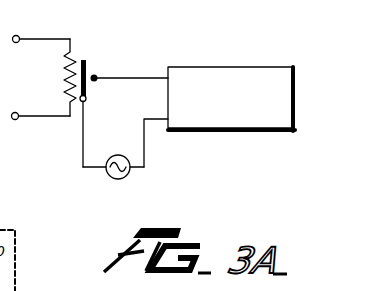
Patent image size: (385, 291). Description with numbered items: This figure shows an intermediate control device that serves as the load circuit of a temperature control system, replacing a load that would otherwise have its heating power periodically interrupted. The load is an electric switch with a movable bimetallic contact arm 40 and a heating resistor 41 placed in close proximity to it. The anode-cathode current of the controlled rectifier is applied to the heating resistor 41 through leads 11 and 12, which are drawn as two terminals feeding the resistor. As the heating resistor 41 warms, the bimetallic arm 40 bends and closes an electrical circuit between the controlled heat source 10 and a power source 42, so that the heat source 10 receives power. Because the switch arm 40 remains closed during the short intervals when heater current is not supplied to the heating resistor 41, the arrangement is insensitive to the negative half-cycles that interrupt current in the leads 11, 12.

The controlled heat source 10 is at (238, 67).
The lead 11 is at (43, 38).
The lead 12 is at (50, 117).
The movable bimetallic contact arm 40 is at (88, 66).
The heating resistor 41 is at (65, 76).
The power source 42 is at (128, 175).